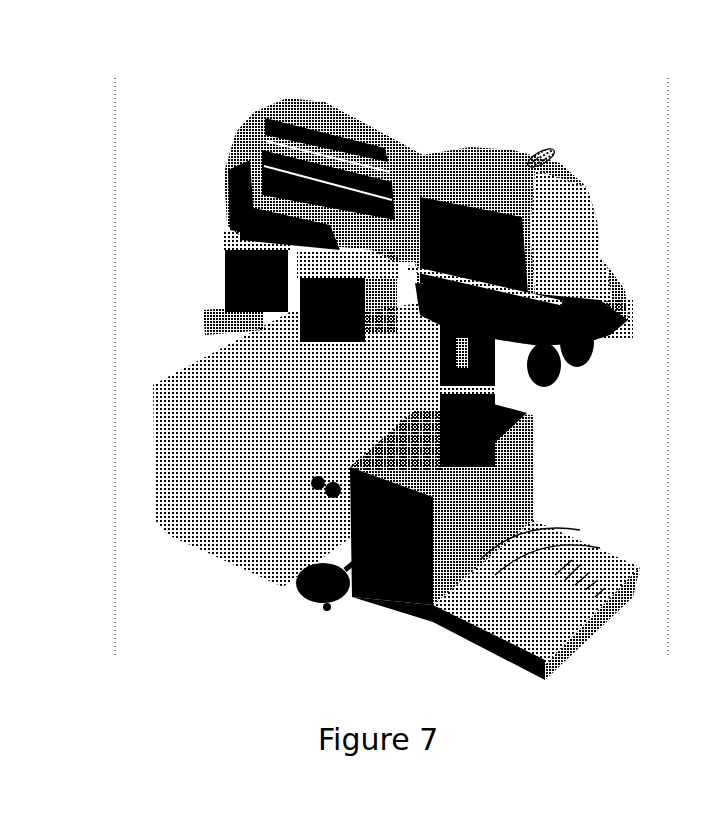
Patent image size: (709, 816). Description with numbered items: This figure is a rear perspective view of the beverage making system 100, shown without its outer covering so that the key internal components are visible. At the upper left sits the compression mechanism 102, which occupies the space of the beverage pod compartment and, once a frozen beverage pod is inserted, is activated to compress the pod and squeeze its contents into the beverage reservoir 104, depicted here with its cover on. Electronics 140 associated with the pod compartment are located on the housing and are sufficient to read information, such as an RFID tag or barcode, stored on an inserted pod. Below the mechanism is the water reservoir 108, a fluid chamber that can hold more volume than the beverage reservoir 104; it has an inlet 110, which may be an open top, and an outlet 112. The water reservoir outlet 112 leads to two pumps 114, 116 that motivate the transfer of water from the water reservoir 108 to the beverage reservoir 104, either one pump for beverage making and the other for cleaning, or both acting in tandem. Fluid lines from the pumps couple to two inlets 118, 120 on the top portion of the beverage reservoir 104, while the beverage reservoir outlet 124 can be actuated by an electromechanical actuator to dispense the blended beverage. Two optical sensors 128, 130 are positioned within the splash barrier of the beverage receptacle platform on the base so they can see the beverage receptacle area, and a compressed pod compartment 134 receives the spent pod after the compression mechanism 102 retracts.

The beverage making system 100 is at (246, 70).
The compression mechanism 102 is at (407, 150).
The beverage reservoir 104 is at (547, 177).
The water reservoir 108 is at (218, 517).
The water reservoir inlet 110 is at (193, 387).
The water reservoir outlet 112 is at (317, 493).
The pump 114 is at (223, 278).
The pump 116 is at (293, 315).
The beverage reservoir inlet 118 is at (467, 203).
The beverage reservoir inlet 120 is at (555, 150).
The beverage reservoir outlet 124 is at (563, 380).
The optical sensor 128 is at (383, 537).
The optical sensor 130 is at (513, 437).
The compressed pod compartment 134 is at (317, 603).
The electronics 140 is at (570, 220).